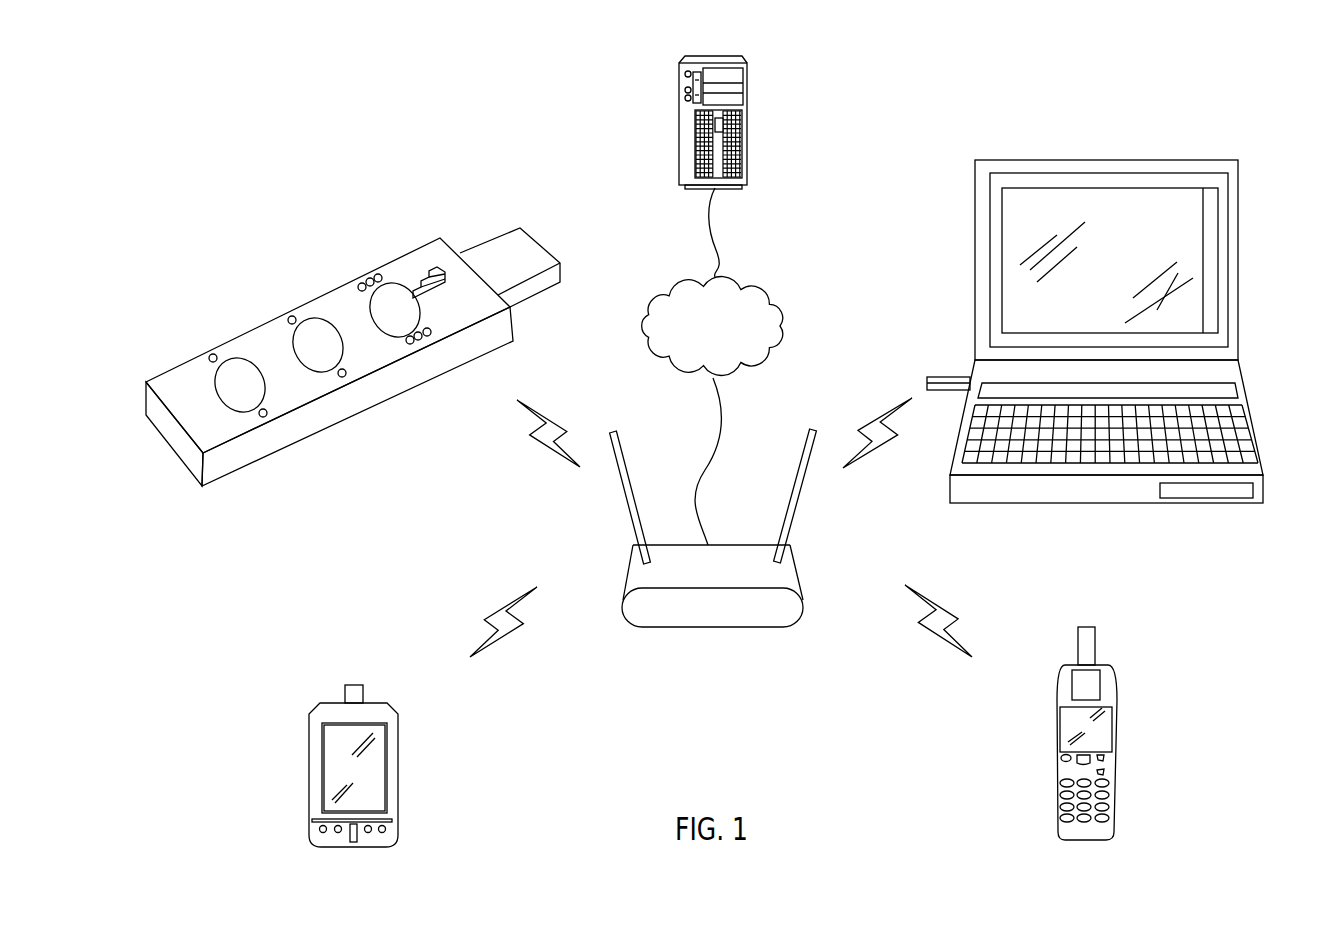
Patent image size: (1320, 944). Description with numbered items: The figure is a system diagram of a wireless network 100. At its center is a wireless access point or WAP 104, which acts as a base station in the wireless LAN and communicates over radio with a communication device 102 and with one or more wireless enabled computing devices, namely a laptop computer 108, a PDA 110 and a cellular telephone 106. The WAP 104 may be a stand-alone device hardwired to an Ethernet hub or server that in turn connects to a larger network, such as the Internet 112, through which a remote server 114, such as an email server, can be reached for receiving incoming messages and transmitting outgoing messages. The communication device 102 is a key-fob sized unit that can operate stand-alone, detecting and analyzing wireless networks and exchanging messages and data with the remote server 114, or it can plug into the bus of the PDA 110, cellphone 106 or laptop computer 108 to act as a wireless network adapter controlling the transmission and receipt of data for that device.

The wireless network 100 is at (344, 125).
The communication device 102 is at (290, 445).
The wireless access point 104 is at (695, 618).
The cellular telephone 106 is at (1117, 763).
The laptop computer 108 is at (1080, 505).
The PDA 110 is at (309, 792).
The Internet 112 is at (698, 337).
The remote server 114 is at (678, 127).